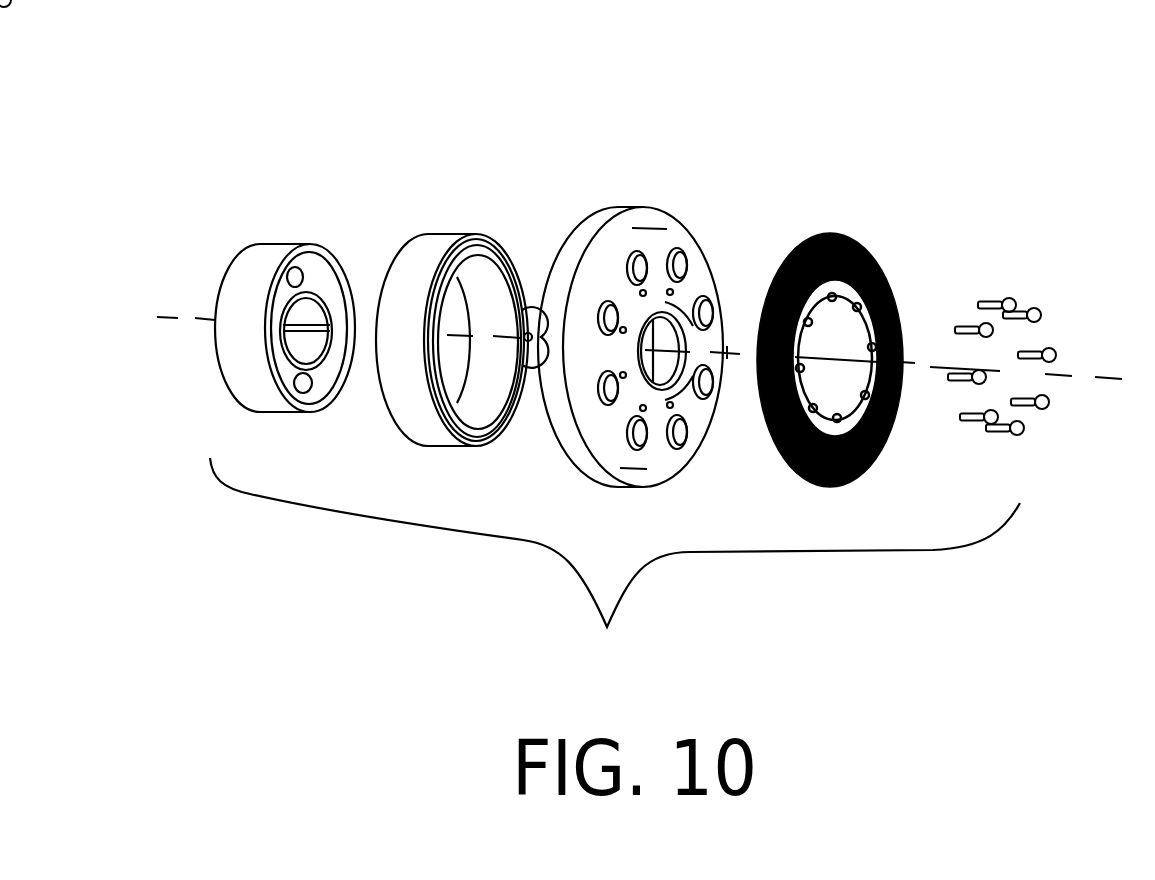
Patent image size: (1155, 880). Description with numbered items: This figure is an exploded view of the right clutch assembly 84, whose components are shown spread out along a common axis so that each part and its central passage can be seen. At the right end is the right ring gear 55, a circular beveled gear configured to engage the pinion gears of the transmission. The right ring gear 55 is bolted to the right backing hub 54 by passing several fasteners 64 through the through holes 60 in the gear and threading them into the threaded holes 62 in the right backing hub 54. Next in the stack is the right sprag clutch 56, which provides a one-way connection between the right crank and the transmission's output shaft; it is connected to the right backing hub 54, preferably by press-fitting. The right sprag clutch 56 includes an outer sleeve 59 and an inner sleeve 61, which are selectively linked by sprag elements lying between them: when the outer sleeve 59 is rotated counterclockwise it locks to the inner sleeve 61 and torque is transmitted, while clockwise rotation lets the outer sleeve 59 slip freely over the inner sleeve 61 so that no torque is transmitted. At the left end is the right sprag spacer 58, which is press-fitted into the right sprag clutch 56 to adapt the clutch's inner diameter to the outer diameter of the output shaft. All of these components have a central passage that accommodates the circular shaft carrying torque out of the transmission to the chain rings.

The right backing hub 54 is at (632, 210).
The right ring gear 55 is at (900, 300).
The right sprag clutch 56 is at (450, 228).
The right sprag spacer 58 is at (280, 248).
The outer sleeve 59 is at (463, 440).
The through holes 60 is at (853, 470).
The inner sleeve 61 is at (490, 440).
The threaded holes 62 is at (670, 406).
The fasteners 64 is at (1050, 350).
The right clutch assembly 84 is at (615, 561).